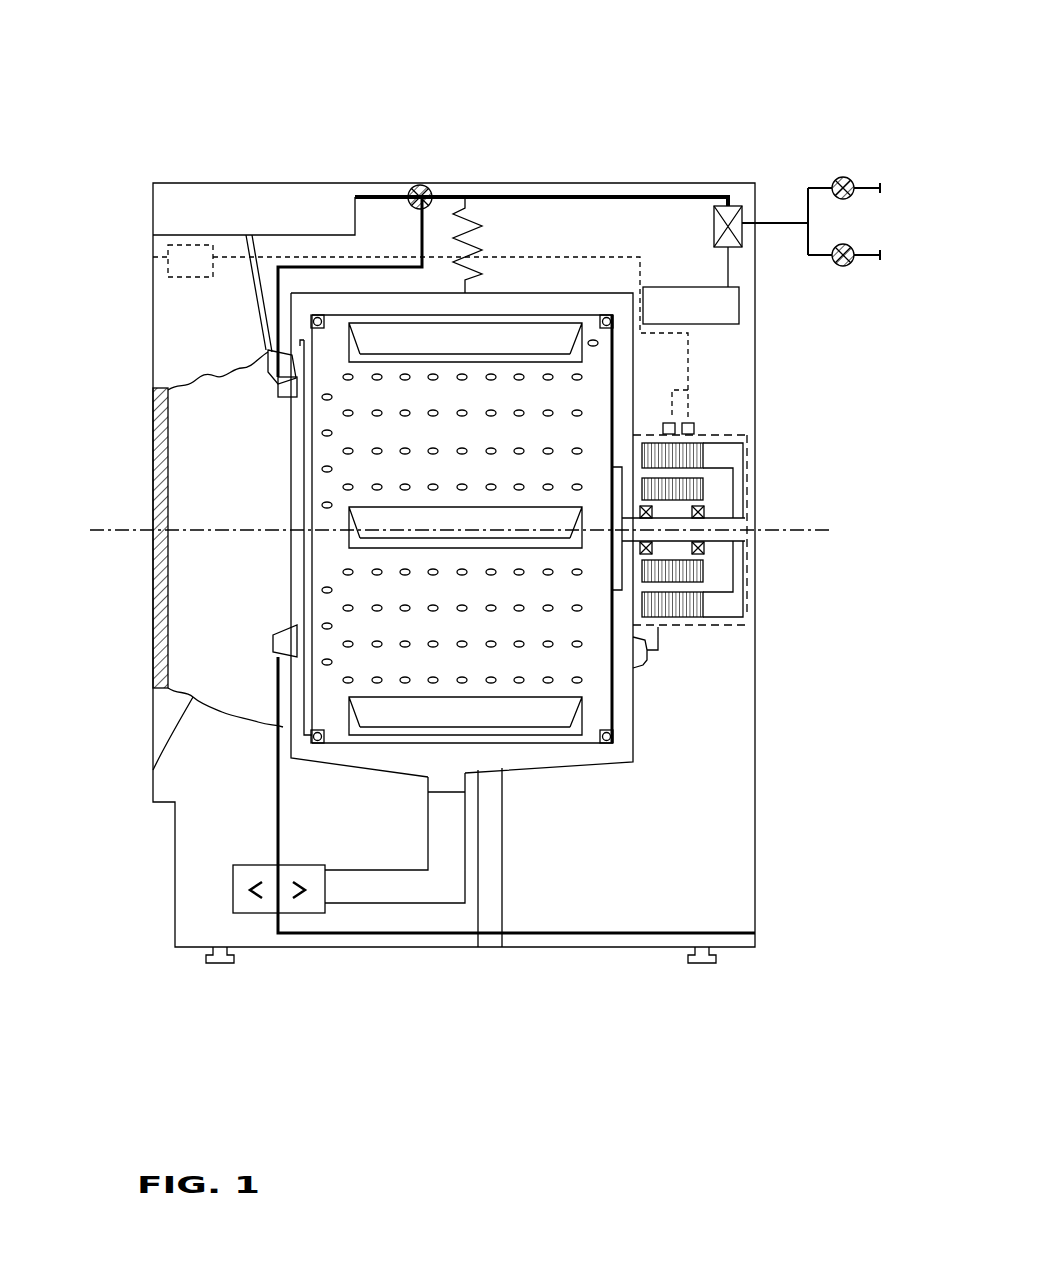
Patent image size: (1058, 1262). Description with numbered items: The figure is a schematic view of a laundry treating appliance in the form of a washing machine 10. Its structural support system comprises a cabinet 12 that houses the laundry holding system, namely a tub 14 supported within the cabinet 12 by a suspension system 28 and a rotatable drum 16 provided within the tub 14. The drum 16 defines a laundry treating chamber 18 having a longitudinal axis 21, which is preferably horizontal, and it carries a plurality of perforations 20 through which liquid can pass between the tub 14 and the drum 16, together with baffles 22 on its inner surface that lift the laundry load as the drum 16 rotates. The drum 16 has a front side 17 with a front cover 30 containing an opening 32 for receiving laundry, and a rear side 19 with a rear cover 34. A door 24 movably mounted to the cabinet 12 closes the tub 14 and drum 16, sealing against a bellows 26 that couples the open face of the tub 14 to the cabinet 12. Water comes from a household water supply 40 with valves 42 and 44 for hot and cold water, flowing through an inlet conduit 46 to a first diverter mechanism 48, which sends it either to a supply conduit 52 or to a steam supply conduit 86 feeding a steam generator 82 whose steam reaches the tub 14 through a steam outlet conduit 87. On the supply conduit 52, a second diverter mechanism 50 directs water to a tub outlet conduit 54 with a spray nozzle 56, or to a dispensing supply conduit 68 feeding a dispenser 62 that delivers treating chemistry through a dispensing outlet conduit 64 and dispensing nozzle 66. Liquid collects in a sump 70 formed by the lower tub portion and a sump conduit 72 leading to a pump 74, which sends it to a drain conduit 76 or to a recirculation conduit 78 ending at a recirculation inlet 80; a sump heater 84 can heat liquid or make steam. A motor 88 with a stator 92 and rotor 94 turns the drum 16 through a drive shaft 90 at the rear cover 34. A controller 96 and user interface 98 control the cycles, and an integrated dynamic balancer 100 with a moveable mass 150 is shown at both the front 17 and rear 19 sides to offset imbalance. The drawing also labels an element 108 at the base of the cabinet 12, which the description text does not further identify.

The washing machine 10 is at (697, 31).
The cabinet 12 is at (669, 175).
The tub 14 is at (500, 292).
The rotatable drum 16 is at (385, 300).
The front side 17 is at (276, 508).
The laundry treating chamber 18 is at (480, 440).
The rear side 19 is at (652, 682).
The perforations 20 is at (580, 413).
The longitudinal axis 21 is at (795, 528).
The baffles 22 is at (565, 718).
The door 24 is at (155, 520).
The bellows 26 is at (193, 700).
The suspension system 28 is at (440, 230).
The front cover 30 is at (293, 305).
The opening 32 is at (303, 418).
The rear cover 34 is at (615, 345).
The household water supply 40 is at (870, 164).
The hot water valve 42 is at (848, 176).
The cold water valve 44 is at (846, 267).
The inlet conduit 46 is at (777, 220).
The first diverter mechanism 48 is at (738, 208).
The second diverter mechanism 50 is at (408, 185).
The supply conduit 52 is at (597, 195).
The tub outlet conduit 54 is at (342, 267).
The spray nozzle 56 is at (262, 352).
The dispenser 62 is at (293, 207).
The dispensing outlet conduit 64 is at (250, 292).
The dispensing nozzle 66 is at (283, 390).
The dispensing supply conduit 68 is at (390, 195).
The sump 70 is at (512, 785).
The sump conduit 72 is at (445, 880).
The pump 74 is at (255, 920).
The drain conduit 76 is at (772, 942).
The recirculation conduit 78 is at (280, 800).
The recirculation inlet 80 is at (283, 643).
The steam generator 82 is at (740, 308).
The sump heater 84 is at (530, 767).
The steam supply conduit 86 is at (742, 260).
The steam outlet conduit 87 is at (660, 645).
The motor 88 is at (756, 434).
The drive shaft 90 is at (715, 540).
The stator 92 is at (697, 448).
The rotor 94 is at (697, 480).
The controller 96 is at (184, 284).
The user interface 98 is at (144, 262).
The integrated dynamic balancer 100 is at (313, 318).
The feet 108 is at (215, 960).
The moveable mass 150 is at (247, 240).